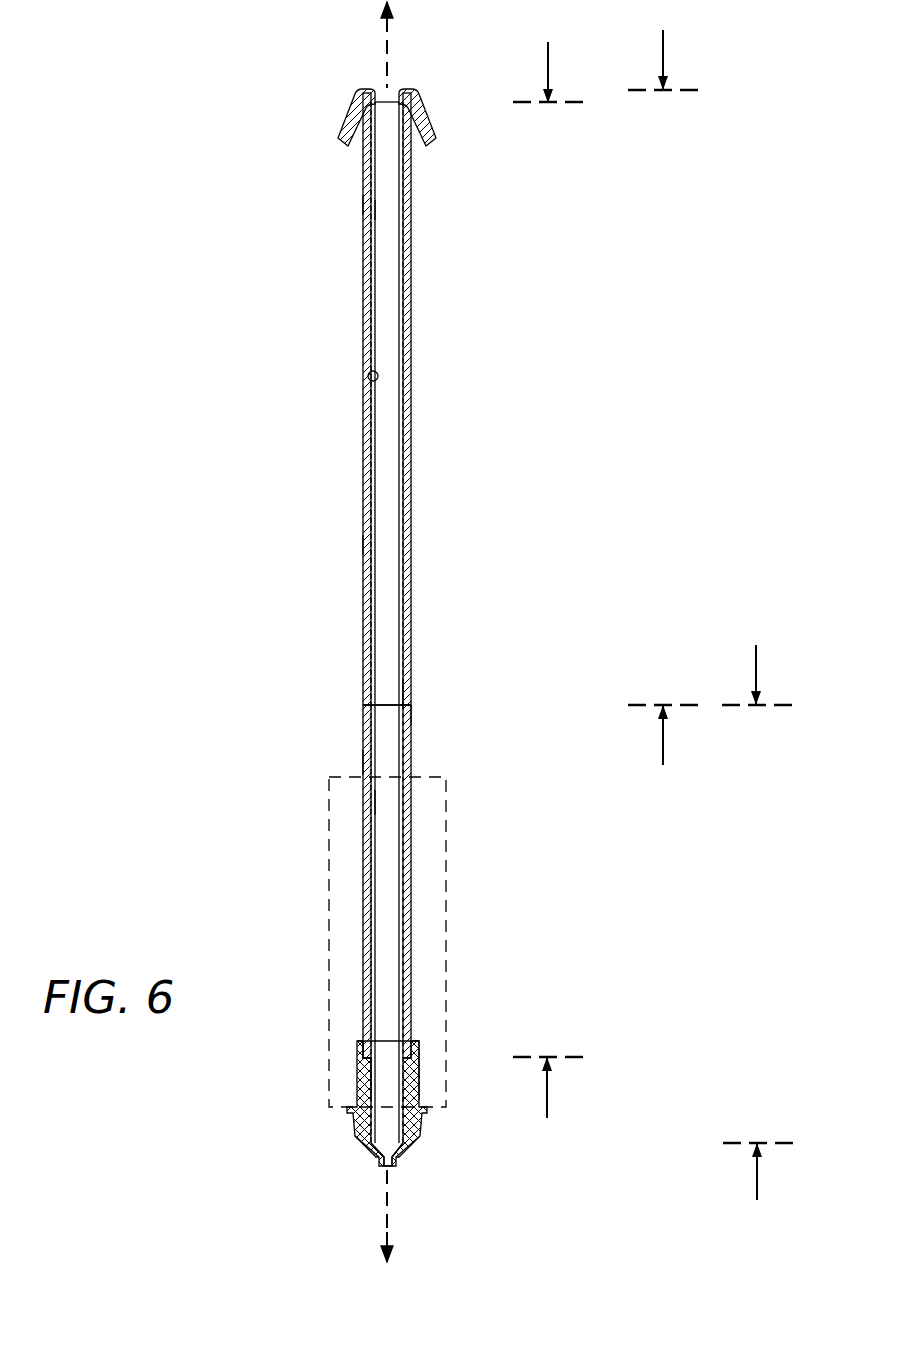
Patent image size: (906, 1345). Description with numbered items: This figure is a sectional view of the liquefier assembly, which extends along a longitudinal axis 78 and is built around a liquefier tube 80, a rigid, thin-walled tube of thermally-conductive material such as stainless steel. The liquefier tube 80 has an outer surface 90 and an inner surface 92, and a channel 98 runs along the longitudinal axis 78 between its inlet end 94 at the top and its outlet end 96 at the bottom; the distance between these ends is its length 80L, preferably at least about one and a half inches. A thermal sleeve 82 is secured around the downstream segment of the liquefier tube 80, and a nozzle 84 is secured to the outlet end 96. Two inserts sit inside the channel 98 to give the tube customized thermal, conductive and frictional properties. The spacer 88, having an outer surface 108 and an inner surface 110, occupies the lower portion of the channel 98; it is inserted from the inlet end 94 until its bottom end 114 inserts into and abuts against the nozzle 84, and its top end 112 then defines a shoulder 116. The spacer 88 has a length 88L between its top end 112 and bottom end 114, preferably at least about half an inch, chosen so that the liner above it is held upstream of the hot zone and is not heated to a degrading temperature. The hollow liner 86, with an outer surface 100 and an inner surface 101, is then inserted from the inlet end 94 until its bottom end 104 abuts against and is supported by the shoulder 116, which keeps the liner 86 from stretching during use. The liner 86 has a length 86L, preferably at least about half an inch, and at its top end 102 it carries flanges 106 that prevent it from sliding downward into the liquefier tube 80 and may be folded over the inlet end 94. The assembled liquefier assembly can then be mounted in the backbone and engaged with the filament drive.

The longitudinal axis 78 is at (387, 45).
The liquefier tube 80 is at (386, 618).
The length 80L is at (548, 58).
The thermal sleeve 82 is at (329, 912).
The nozzle 84 is at (382, 1103).
The liner 86 is at (363, 238).
The length 86L is at (663, 742).
The spacer 88 is at (412, 745).
The length 88L is at (756, 655).
The outer surface 90 is at (365, 545).
The inner surface 92 is at (371, 371).
The inlet end 94 is at (373, 94).
The outlet end 96 is at (360, 1068).
The channel 98 is at (397, 100).
The outer surface 100 is at (365, 208).
The inner surface 101 is at (388, 210).
The top end 102 is at (352, 94).
The bottom end 104 is at (363, 703).
The flanges 106 is at (437, 130).
The outer surface 108 is at (365, 762).
The inner surface 110 is at (388, 803).
The top end 112 is at (412, 712).
The bottom end 114 is at (362, 1142).
The shoulder 116 is at (405, 692).